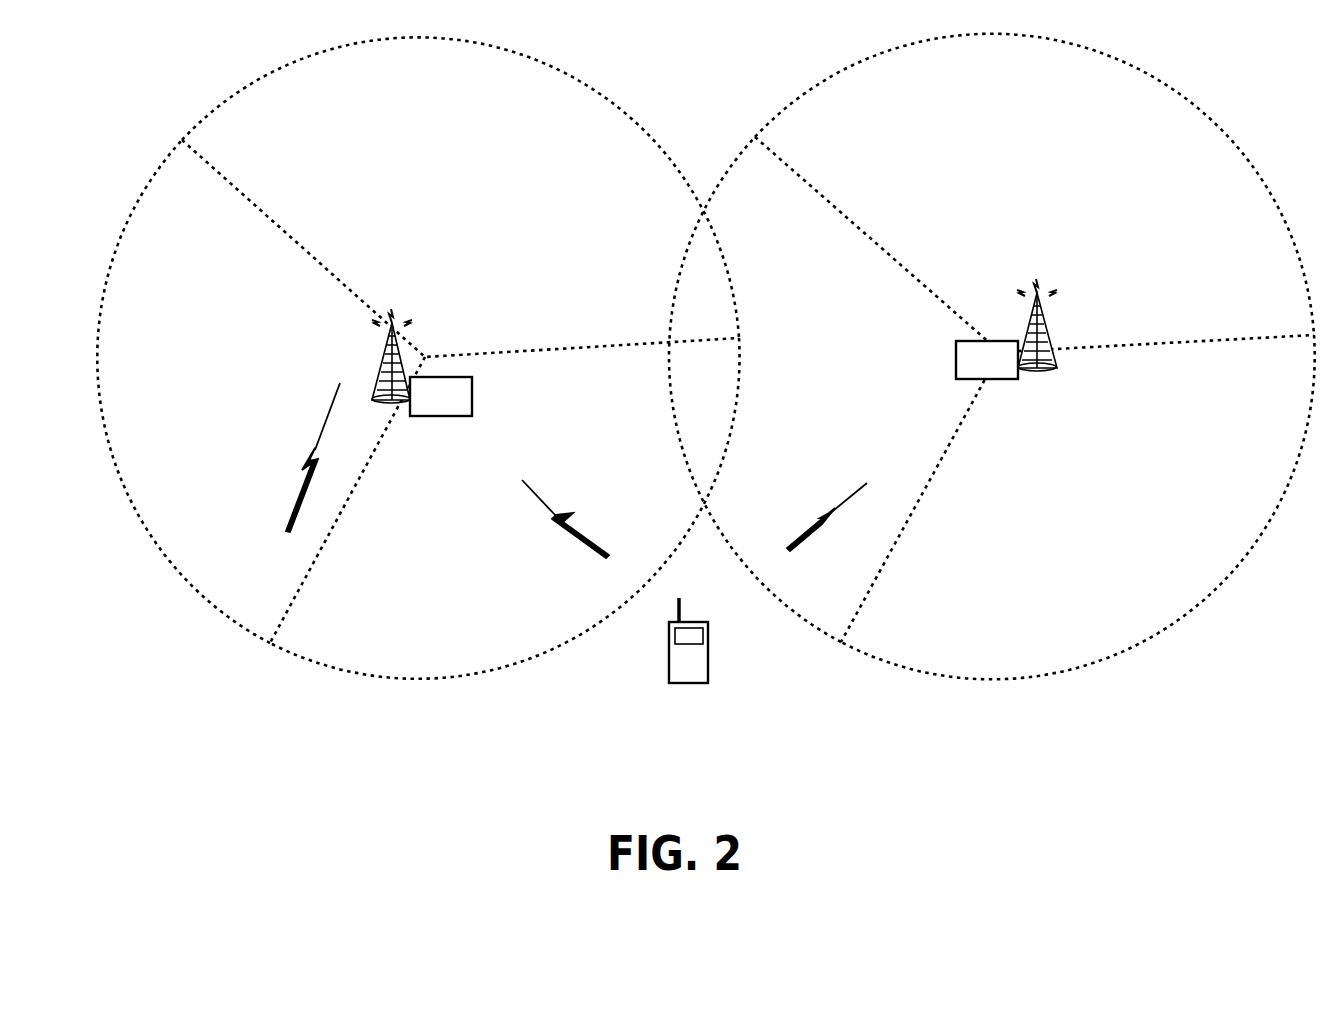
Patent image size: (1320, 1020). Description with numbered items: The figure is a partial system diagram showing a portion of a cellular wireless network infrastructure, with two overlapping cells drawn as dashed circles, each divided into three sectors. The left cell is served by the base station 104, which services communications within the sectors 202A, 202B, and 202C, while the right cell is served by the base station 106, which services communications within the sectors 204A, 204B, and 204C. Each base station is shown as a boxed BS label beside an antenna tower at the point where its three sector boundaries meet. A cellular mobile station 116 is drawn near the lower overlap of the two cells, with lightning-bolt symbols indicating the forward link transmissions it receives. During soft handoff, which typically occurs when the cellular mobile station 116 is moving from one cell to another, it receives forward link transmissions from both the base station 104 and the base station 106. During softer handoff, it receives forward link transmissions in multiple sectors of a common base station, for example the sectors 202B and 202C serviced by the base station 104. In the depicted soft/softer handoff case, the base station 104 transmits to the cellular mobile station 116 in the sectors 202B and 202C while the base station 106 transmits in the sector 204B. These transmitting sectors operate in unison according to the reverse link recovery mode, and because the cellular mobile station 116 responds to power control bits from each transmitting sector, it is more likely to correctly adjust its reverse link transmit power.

The base station 104 is at (472, 395).
The base station 106 is at (956, 363).
The cellular mobile station 116 is at (708, 650).
The sector 202A is at (512, 219).
The sector 202B is at (258, 399).
The sector 202C is at (485, 597).
The sector 204A is at (1113, 162).
The sector 204B is at (860, 342).
The sector 204C is at (1085, 541).